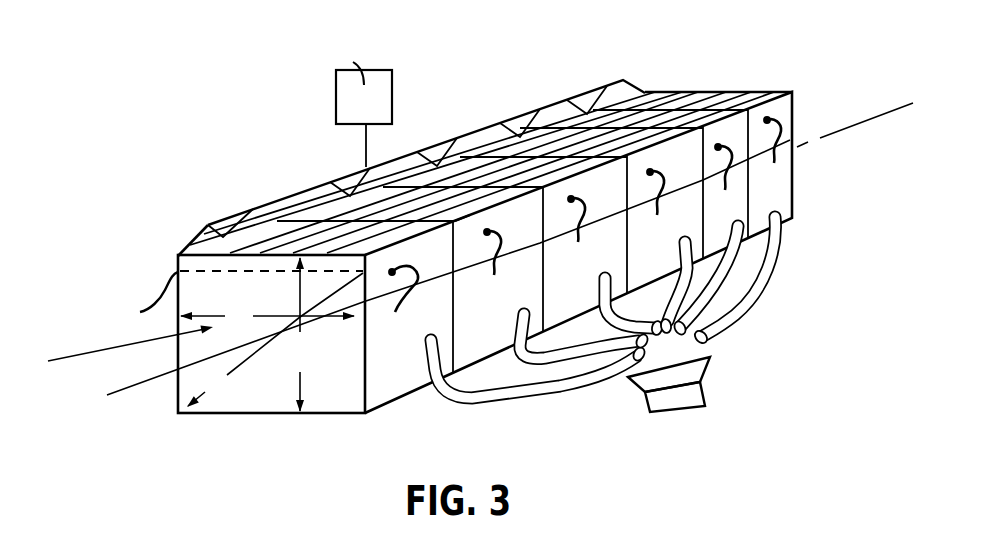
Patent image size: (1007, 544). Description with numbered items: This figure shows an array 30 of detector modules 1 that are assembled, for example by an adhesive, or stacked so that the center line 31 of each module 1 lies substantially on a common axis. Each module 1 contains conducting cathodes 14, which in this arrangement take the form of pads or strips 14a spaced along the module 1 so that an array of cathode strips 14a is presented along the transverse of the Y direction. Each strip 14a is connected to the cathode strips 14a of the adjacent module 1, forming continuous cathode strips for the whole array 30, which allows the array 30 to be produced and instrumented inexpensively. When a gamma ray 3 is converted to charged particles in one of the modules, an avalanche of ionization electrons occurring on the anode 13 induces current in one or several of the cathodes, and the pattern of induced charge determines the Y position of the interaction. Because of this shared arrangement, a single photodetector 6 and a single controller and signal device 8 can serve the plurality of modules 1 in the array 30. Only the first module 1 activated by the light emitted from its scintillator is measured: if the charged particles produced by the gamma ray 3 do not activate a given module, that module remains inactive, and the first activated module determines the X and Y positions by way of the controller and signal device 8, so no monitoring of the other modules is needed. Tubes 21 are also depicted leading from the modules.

The module 1 is at (800, 125).
The gamma ray 3 is at (90, 352).
The photodetector 6 is at (695, 392).
The controller and signal device 8 is at (324, 94).
The anode 13 is at (396, 308).
The cathode 14 is at (467, 212).
The cathode strip 14a is at (255, 237).
The tube 21 is at (455, 406).
The array 30 is at (543, 113).
The center line 31 is at (138, 383).